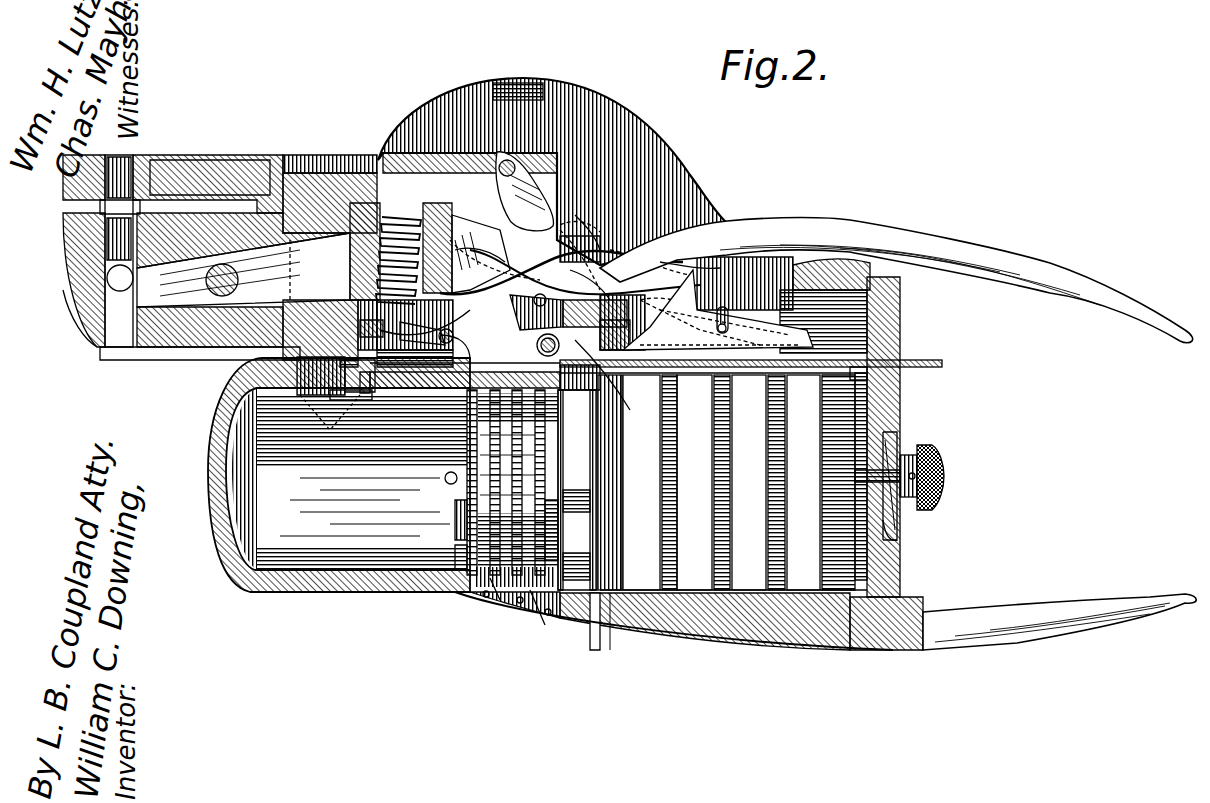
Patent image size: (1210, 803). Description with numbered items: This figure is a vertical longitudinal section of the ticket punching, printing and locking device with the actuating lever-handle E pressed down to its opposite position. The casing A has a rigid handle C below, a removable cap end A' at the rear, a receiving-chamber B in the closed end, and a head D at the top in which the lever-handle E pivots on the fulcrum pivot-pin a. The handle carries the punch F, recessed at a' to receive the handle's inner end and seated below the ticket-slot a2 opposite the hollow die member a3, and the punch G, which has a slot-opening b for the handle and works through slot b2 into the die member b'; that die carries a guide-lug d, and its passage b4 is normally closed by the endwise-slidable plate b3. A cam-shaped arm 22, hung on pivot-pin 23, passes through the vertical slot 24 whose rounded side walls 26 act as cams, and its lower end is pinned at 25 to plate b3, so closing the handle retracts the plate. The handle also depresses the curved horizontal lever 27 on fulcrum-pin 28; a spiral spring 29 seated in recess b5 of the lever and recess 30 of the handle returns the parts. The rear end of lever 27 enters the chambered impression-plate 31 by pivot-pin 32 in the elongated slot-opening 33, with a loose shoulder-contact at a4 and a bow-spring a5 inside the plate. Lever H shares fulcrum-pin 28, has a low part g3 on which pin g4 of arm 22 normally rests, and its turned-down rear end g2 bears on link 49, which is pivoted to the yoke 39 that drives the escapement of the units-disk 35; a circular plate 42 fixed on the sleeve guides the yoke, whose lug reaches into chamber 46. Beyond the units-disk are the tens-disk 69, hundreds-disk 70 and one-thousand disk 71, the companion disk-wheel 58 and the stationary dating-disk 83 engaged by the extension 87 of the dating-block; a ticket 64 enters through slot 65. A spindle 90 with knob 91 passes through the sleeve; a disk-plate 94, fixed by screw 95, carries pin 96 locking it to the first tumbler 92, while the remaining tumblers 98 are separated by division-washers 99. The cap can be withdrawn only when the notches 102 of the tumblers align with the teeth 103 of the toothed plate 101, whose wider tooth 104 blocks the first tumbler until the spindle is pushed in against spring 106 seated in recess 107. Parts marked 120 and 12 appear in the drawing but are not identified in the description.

The slot in casing 120 is at (522, 82).
The recess 30 is at (385, 165).
The head D is at (233, 160).
The hollow die member a3 is at (210, 180).
The punch member G is at (330, 194).
The punch F is at (110, 244).
The ticket-slot a2 is at (105, 208).
The recess a' is at (53, 318).
The slot-opening b is at (243, 270).
The fulcrum pivot-pin a is at (172, 320).
The recess b5 is at (320, 333).
The slot b2 is at (300, 347).
The hollow die member b' is at (282, 382).
The low part g3 is at (430, 251).
The spiral spring 29 is at (462, 228).
The side walls 26 is at (560, 232).
The cam-shaped arm 22 is at (525, 191).
The pivot-pin 23 is at (511, 165).
The vertical slot 24 is at (578, 235).
The lever H is at (540, 290).
The curved horizontal lever 27 is at (588, 287).
The rear end g2 is at (670, 293).
The projecting pin g4 is at (547, 338).
The link 49 is at (600, 366).
The bow-spring a5 is at (700, 322).
The actuating lever-handle E is at (1058, 277).
The shoulder-contact a4 is at (685, 262).
The elongated slot-opening 33 is at (722, 305).
The chambered impression-plate 31 is at (753, 322).
The pivot-pin 32 is at (737, 327).
The removable cap end A' is at (923, 437).
The ticket 64 is at (943, 363).
The slot 65 is at (903, 366).
The pin 96 is at (477, 423).
The recess 107 is at (905, 440).
The knob 91 is at (944, 490).
The spring 106 is at (900, 537).
The dating-disk 83 is at (898, 572).
The extension 87 is at (851, 382).
The spindle 90 is at (888, 474).
The wheel 12 is at (621, 482).
The pin 25 is at (577, 490).
The tens-disk 69 is at (697, 585).
The hundreds-disk 70 is at (750, 585).
The one-thousand disk 71 is at (800, 585).
The companion disk-wheel 58 is at (862, 590).
The units-disk 35 is at (660, 583).
The yoke 39 is at (603, 592).
The circular plate 42 is at (617, 595).
The receiving-chamber B is at (339, 475).
The guide-lug d is at (319, 425).
The passage b4 is at (372, 388).
The endwise-slidable plate b3 is at (442, 337).
The fulcrum-pin 28 is at (463, 350).
The tumblers 98 is at (477, 448).
The division-washers 99 is at (500, 507).
The screw 95 is at (449, 482).
The disk-plate 94 is at (457, 523).
The wider tooth 104 is at (462, 553).
The chamber 46 is at (565, 530).
The casing A is at (643, 622).
The teeth 103 is at (534, 606).
The first tumbler 92 is at (467, 594).
The notches 102 is at (493, 580).
The toothed plate 101 is at (537, 627).
The rigid handle C is at (997, 650).